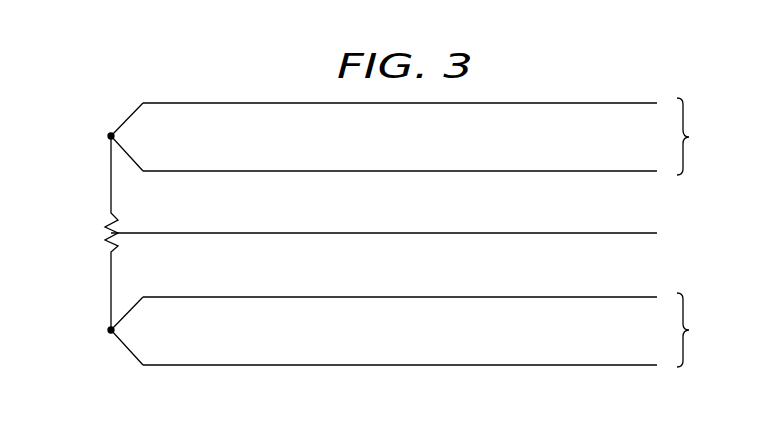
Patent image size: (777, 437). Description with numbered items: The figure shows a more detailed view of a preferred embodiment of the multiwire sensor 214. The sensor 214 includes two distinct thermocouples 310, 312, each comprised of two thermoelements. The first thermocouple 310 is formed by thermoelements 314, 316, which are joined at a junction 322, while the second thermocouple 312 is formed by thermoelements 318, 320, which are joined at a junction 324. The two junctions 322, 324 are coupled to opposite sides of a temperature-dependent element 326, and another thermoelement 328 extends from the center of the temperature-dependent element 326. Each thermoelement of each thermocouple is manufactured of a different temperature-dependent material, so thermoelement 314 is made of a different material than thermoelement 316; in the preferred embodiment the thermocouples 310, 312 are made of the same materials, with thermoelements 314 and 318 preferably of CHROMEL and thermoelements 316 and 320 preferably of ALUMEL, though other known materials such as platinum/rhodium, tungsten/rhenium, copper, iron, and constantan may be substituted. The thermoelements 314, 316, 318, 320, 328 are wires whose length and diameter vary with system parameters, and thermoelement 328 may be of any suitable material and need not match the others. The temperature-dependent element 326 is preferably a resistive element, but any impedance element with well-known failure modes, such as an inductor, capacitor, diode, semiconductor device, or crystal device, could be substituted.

The multiwire sensor 214 is at (573, 72).
The thermocouple 310 is at (706, 136).
The thermocouple 312 is at (706, 330).
The thermoelement 314 is at (605, 104).
The thermoelement 316 is at (605, 172).
The thermoelement 318 is at (605, 298).
The thermoelement 320 is at (605, 366).
The junction 322 is at (111, 136).
The junction 324 is at (111, 330).
The temperature-dependent element 326 is at (105, 230).
The thermoelement 328 is at (605, 234).